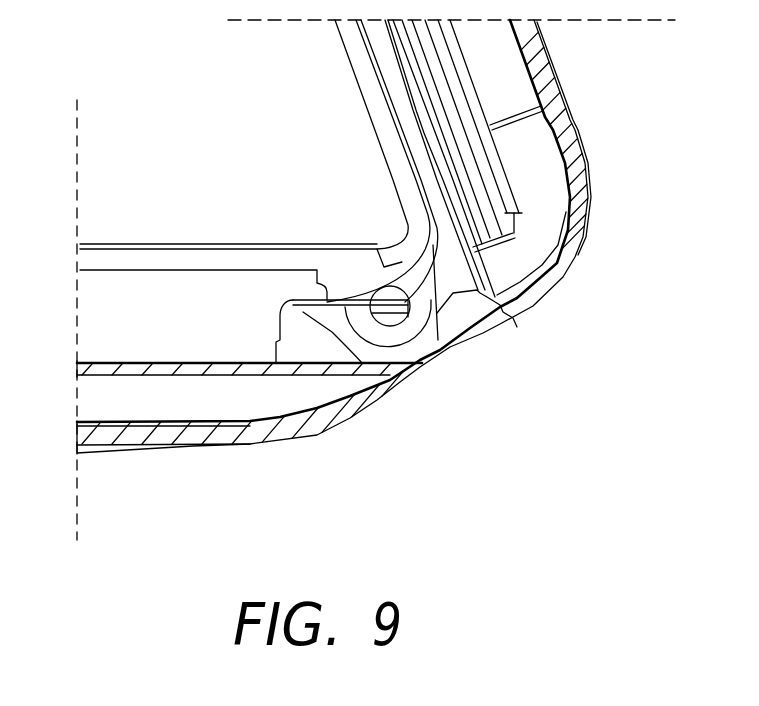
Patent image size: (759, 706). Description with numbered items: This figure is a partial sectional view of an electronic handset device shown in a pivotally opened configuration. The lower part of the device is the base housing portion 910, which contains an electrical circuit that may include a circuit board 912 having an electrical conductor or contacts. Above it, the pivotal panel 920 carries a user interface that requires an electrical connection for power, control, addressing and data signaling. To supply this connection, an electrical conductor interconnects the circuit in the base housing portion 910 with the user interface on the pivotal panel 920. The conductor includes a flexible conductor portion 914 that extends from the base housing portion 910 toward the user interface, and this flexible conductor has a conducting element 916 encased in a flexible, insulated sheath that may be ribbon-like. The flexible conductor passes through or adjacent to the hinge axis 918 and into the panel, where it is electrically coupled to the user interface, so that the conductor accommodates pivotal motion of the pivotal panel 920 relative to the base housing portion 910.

The base housing portion 910 is at (317, 436).
The circuit board 912 is at (88, 362).
The flexible conductor portion 914 is at (438, 340).
The conducting element 916 is at (280, 320).
The hinge axis 918 is at (390, 313).
The pivotal panel 920 is at (374, 125).